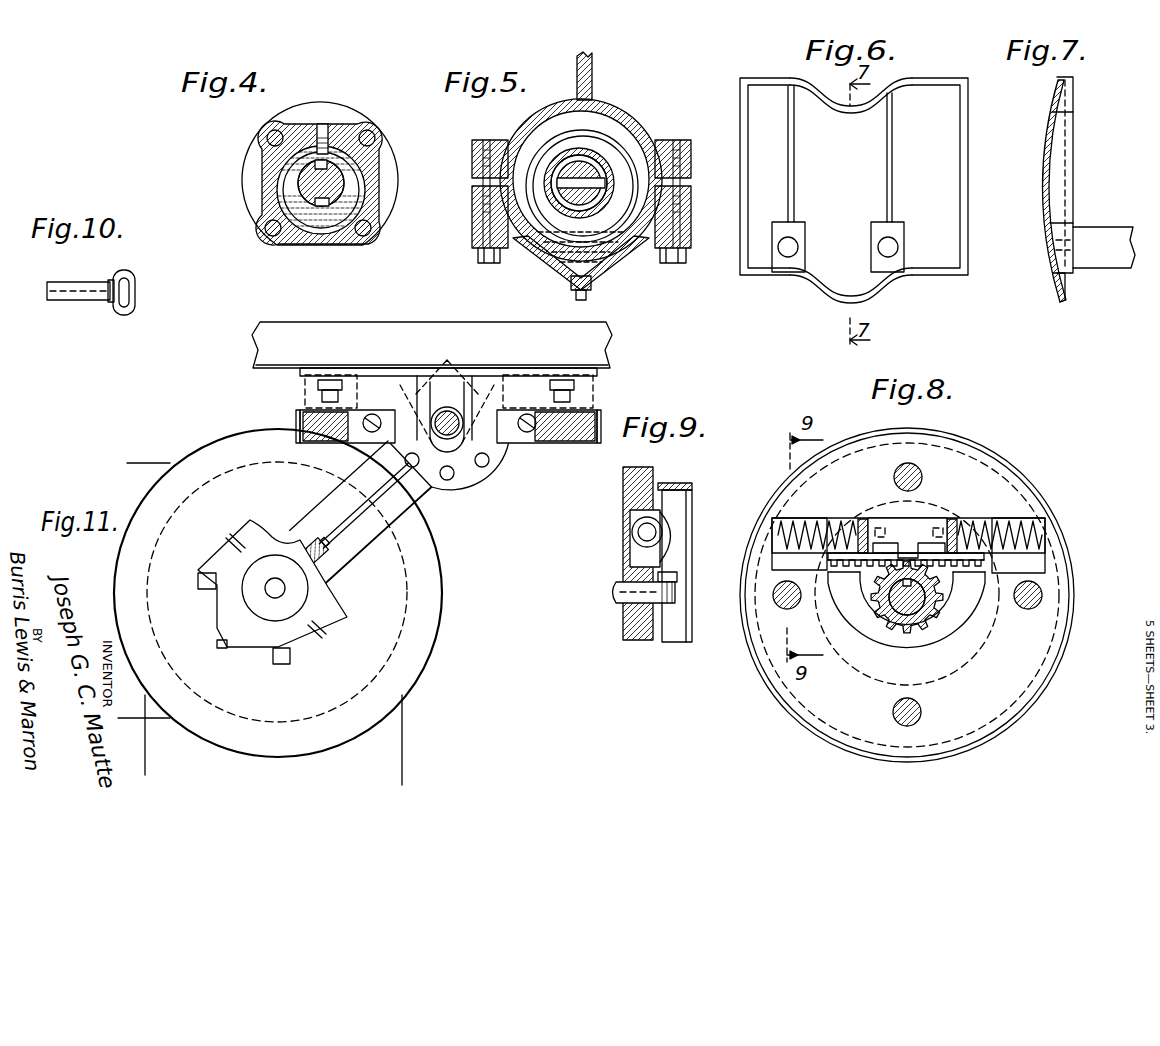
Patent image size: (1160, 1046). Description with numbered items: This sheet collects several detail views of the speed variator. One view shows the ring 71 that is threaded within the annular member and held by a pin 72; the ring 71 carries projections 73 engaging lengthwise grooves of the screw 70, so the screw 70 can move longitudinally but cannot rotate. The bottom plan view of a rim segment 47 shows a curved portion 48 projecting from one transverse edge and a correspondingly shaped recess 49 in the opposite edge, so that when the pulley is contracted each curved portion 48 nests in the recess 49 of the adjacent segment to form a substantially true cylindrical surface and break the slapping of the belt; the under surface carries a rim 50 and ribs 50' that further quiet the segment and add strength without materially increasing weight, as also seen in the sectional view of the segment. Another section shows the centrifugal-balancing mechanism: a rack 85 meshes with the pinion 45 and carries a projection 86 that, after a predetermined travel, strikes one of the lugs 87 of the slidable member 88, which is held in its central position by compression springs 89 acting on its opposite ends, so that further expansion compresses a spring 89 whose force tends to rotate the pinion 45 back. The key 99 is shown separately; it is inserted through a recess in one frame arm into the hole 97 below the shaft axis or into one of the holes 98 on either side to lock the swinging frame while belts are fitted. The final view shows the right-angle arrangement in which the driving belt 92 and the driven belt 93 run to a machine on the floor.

In FIG. 8, the pinion 45 is at (890, 618).
In FIG. 6, the rim segment 47 is at (937, 163).
In FIG. 7, the rim segment 47 is at (1040, 172).
In FIG. 6, the curved portion 48 is at (833, 297).
In FIG. 6, the recess 49 is at (887, 92).
In FIG. 6, the rim 50 is at (821, 176).
In FIG. 7, the rim 50 is at (1094, 190).
In FIG. 6, the ribs 50' is at (838, 179).
In FIG. 7, the ribs 50' is at (1094, 176).
In FIG. 4, the screw 70 is at (329, 206).
In FIG. 4, the ring 71 is at (347, 203).
In FIG. 4, the pin 72 is at (320, 127).
In FIG. 4, the projections 73 is at (345, 183).
In FIG. 8, the rack 85 is at (972, 565).
In FIG. 8, the projection 86 is at (909, 552).
In FIG. 8, the lugs 87 is at (866, 542).
In FIG. 8, the slidable member 88 is at (905, 520).
In FIG. 9, the compression springs 89 is at (635, 545).
In FIG. 8, the compression springs 89 is at (800, 520).
In FIG. 11, the driving belt 92 is at (153, 462).
In FIG. 11, the driven belt 93 is at (145, 757).
In FIG. 11, the hole 97 is at (450, 475).
In FIG. 11, the holes 98 is at (415, 460).
In FIG. 10, the key 99 is at (72, 290).